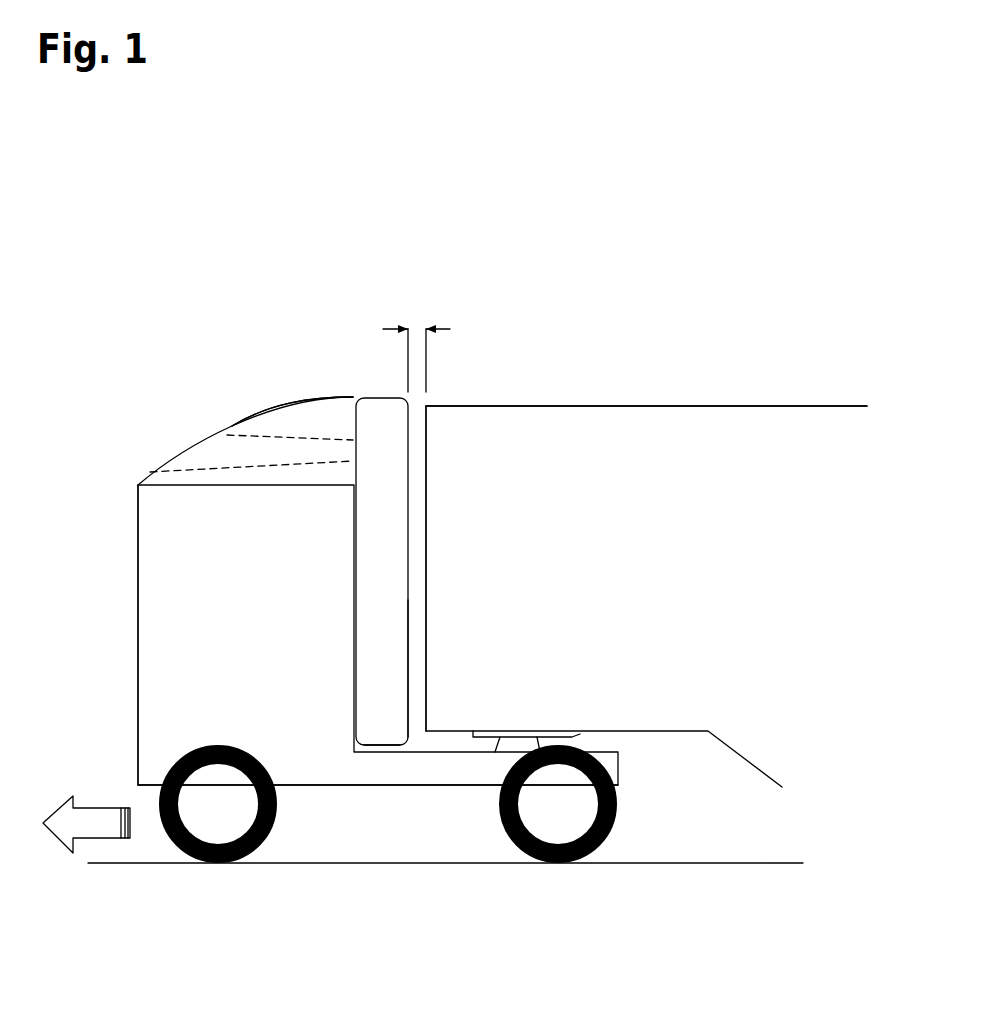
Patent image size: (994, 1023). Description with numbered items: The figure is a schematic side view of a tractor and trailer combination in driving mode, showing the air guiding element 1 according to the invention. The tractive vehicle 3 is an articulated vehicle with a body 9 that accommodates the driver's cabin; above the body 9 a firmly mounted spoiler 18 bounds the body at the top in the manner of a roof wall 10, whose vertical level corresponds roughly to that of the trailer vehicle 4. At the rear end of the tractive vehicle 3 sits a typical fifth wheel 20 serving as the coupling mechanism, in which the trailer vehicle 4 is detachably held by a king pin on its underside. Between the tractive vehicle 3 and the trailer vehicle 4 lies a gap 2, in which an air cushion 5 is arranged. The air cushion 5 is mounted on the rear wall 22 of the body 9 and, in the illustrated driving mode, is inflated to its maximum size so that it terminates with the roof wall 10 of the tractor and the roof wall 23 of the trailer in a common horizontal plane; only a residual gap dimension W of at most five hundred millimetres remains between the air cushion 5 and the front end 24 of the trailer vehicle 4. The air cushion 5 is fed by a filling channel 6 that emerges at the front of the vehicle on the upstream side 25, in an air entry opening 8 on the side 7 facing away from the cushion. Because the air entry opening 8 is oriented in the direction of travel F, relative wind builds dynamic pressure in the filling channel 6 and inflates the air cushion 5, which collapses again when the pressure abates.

The air guiding element 1 is at (205, 412).
The gap 2 is at (413, 520).
The tractive vehicle 3 is at (118, 760).
The trailer vehicle 4 is at (715, 390).
The air cushion 5 is at (372, 604).
The filling channel 6 is at (252, 452).
The side facing away from the air cushion 7 is at (233, 462).
The air entry opening 8 is at (183, 455).
The body 9 is at (270, 606).
The roof wall 10 is at (297, 403).
The spoiler 18 is at (297, 403).
The fifth wheel 20 is at (575, 736).
The rear wall 22 is at (358, 744).
The roof wall of the trailer vehicle 23 is at (580, 406).
The front end of the trailer vehicle 24 is at (419, 703).
The upstream side 25 is at (138, 625).
The residual gap dimension W is at (450, 329).
The direction of travel F is at (68, 826).